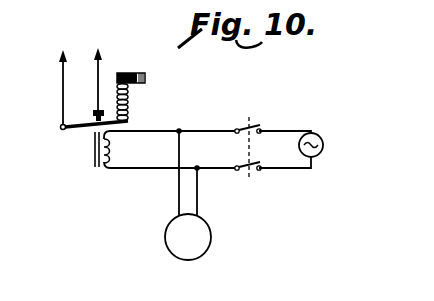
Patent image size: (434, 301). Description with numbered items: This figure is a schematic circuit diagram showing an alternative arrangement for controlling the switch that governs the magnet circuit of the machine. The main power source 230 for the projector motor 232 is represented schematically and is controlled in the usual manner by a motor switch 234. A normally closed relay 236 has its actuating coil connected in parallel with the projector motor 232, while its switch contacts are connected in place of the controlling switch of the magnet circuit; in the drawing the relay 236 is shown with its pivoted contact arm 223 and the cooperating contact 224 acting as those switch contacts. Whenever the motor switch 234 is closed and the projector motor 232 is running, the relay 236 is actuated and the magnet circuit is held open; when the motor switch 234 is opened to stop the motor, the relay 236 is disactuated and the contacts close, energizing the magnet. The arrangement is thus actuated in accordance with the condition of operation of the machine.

The pivoted switch lever 223 is at (63, 85).
The contact 224 is at (99, 70).
The main power source 230 is at (323, 146).
The projector motor 232 is at (211, 237).
The motor switch 234 is at (251, 120).
The normally closed relay 236 is at (86, 136).